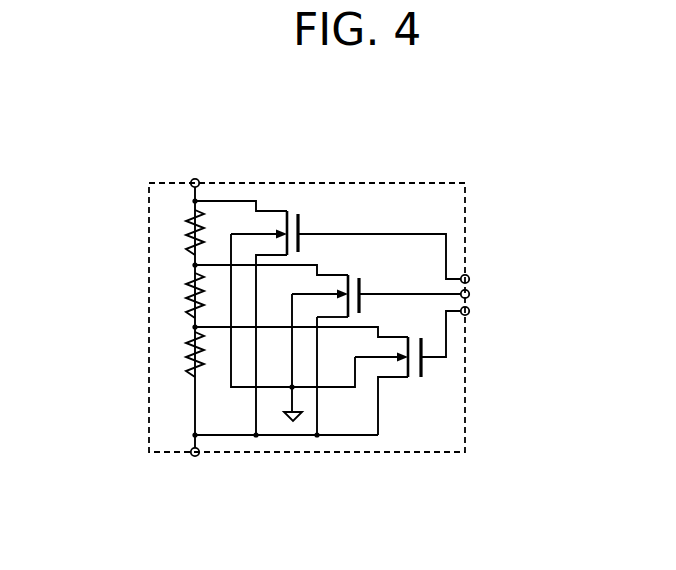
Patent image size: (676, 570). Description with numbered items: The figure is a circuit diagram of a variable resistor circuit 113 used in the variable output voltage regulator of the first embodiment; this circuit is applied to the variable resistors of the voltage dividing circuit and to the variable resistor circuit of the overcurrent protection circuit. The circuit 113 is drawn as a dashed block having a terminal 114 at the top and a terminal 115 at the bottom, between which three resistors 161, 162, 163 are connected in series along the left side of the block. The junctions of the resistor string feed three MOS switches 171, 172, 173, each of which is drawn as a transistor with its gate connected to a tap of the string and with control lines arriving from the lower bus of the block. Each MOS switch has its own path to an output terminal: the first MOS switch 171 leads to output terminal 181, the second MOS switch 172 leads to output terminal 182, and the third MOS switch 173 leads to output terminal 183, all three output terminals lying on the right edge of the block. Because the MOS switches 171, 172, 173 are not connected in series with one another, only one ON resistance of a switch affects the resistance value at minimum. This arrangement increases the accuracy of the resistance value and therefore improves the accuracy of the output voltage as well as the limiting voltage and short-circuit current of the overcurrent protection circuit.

The variable resistor circuit 113 is at (307, 357).
The terminal 114 is at (194, 163).
The terminal 115 is at (192, 472).
The resistor 161 is at (121, 246).
The resistor 162 is at (121, 308).
The resistor 163 is at (121, 369).
The MOS switch 171 is at (292, 197).
The MOS switch 172 is at (356, 257).
The MOS switch 173 is at (443, 390).
The output terminal 181 is at (493, 272).
The output terminal 182 is at (493, 305).
The output terminal 183 is at (493, 328).